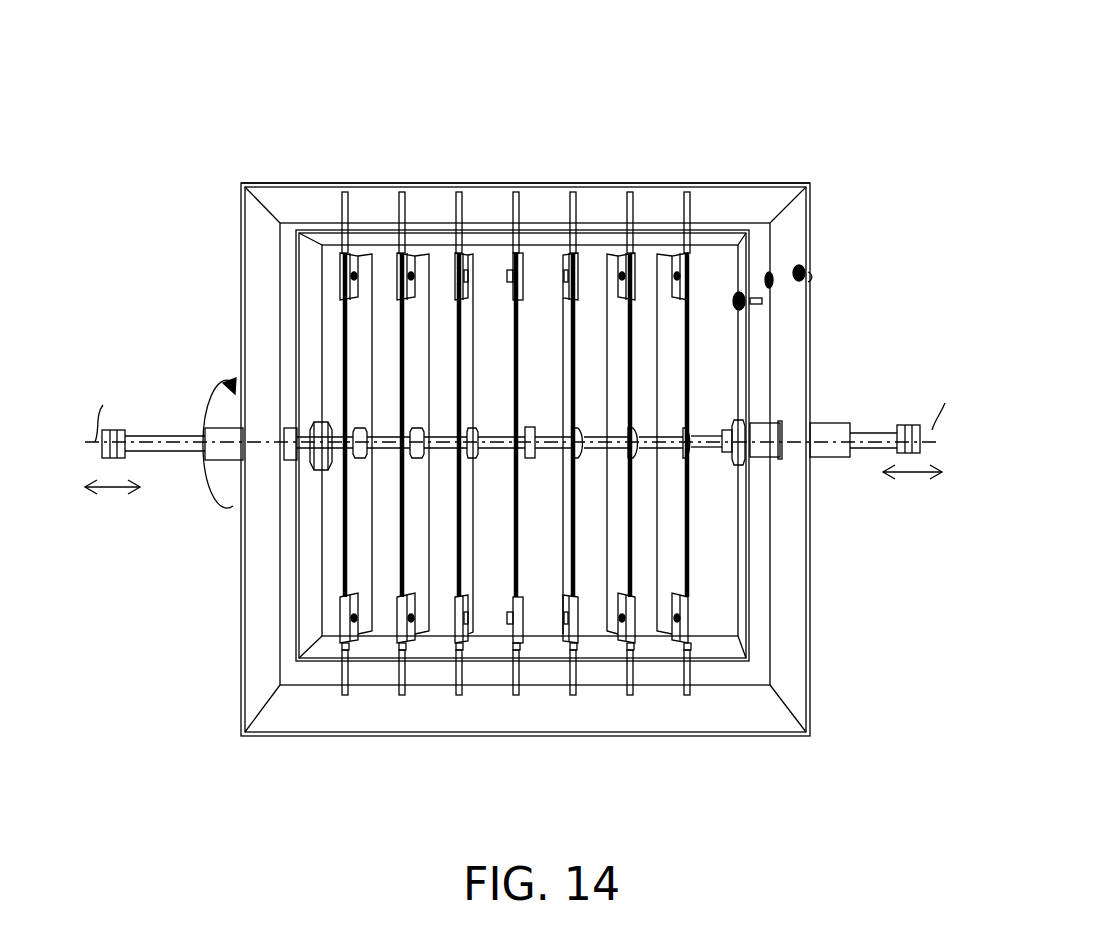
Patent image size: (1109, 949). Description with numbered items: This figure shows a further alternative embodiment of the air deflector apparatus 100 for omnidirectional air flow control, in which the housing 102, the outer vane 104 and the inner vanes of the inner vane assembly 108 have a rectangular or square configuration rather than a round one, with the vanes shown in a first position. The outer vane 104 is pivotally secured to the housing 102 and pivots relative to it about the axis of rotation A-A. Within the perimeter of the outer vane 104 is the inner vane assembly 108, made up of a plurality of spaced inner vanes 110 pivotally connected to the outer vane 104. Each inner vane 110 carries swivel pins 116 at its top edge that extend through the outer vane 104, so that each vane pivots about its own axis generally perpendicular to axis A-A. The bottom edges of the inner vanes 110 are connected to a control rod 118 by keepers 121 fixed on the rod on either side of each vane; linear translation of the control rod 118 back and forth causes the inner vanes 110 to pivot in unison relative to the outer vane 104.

The air deflector apparatus 100 is at (416, 112).
The housing 102 is at (313, 185).
The outer vane 104 is at (750, 250).
The inner vane assembly 108 is at (343, 563).
The inner vane 110 is at (672, 343).
The swivel pin 116 is at (410, 673).
The control rod 118 is at (873, 432).
The keeper 121 is at (472, 427).